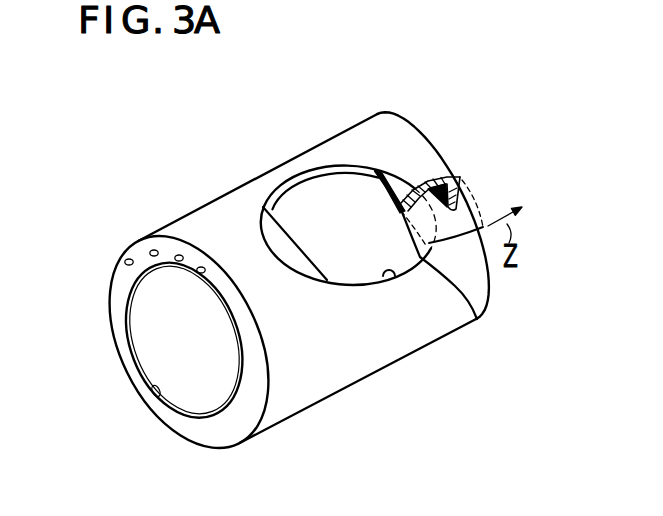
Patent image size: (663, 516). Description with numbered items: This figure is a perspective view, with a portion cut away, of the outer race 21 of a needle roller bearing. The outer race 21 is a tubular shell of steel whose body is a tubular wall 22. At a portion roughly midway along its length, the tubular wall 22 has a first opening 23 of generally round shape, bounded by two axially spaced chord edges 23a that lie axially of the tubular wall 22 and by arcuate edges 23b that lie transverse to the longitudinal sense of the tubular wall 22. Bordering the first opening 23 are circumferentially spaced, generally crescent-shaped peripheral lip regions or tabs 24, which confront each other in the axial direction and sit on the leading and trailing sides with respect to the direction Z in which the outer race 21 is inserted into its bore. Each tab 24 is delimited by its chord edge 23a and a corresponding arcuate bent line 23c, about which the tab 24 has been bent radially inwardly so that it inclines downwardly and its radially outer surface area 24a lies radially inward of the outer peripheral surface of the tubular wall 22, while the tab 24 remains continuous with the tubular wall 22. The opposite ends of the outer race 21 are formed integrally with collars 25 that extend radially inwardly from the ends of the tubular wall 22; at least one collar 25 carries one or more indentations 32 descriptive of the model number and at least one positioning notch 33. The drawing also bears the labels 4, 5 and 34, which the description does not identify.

The outer race 21 is at (190, 210).
The tubular wall 22 is at (358, 140).
The first opening 23 is at (312, 193).
The chord edges 23a is at (477, 320).
The arcuate edges 23b is at (392, 273).
The arcuate bent line 23c is at (418, 186).
The peripheral lip regions or tabs 24 is at (270, 218).
The radially outer surface areas 24a is at (397, 190).
The collars 25 is at (127, 348).
The indentations 32 is at (127, 250).
The positioning notch 33 is at (152, 396).
The bore 34 is at (200, 419).
The hook 4 is at (404, 186).
The engaging projection 5 is at (460, 195).